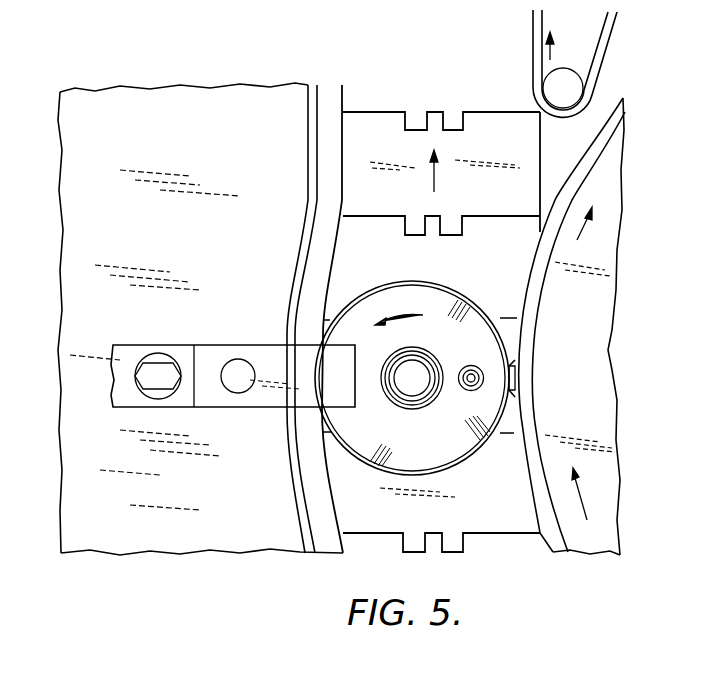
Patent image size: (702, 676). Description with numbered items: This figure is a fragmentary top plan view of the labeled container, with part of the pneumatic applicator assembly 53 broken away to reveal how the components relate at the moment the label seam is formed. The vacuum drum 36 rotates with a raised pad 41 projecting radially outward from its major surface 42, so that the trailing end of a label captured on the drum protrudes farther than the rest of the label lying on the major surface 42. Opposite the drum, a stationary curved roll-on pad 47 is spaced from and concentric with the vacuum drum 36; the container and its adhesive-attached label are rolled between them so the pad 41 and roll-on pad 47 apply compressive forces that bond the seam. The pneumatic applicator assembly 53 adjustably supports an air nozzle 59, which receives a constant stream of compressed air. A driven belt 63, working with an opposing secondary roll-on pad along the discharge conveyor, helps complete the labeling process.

The driven belt 63 is at (532, 48).
The vacuum drum 36 is at (523, 272).
The pneumatic applicator assembly 53 is at (205, 341).
The air nozzle 59 is at (469, 367).
The raised pad 41 is at (515, 373).
The roll-on pad 47 is at (322, 515).
The major surface 42 is at (533, 493).